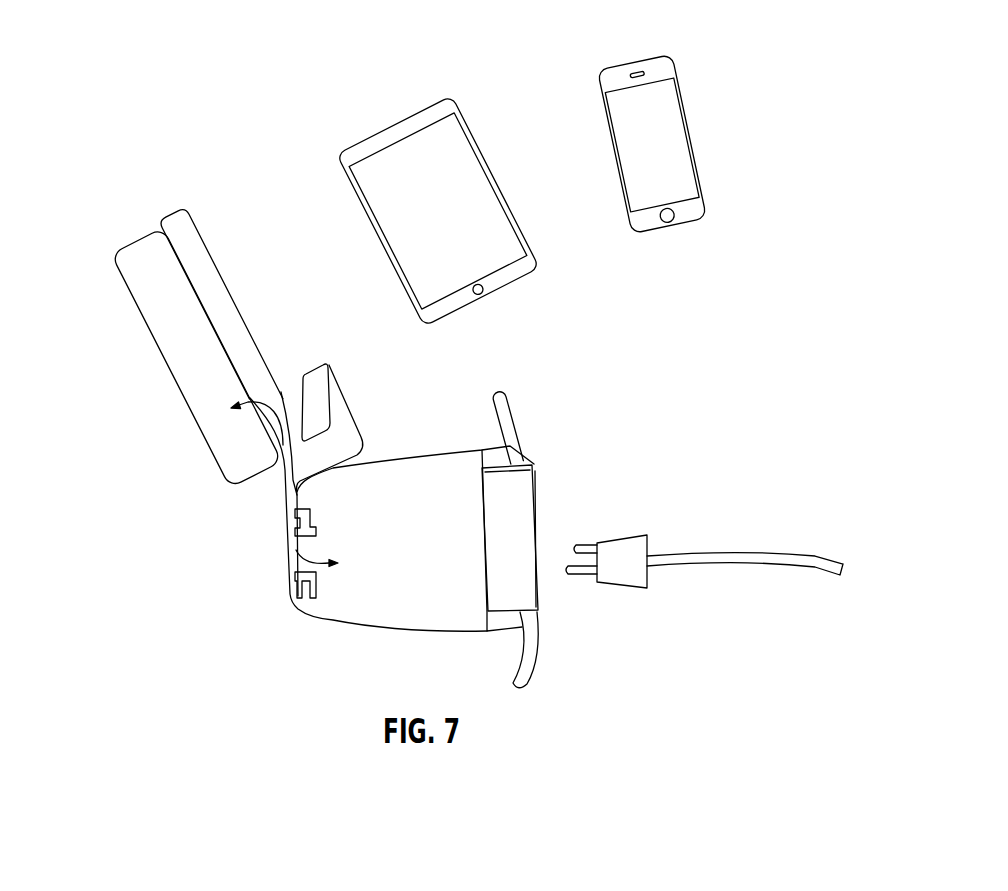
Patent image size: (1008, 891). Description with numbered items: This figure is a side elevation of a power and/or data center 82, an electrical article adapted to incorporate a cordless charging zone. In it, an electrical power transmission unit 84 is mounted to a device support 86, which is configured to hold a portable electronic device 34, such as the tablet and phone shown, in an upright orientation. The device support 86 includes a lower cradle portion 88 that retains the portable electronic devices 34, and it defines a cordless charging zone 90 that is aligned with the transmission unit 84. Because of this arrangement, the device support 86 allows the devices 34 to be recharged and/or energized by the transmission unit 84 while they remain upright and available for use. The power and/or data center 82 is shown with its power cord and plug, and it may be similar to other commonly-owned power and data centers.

The portable electronic device 34 is at (386, 118).
The power and/or data center 82 is at (659, 374).
The electrical power transmission unit 84 is at (142, 327).
The device support 86 is at (208, 242).
The lower cradle portion 88 is at (333, 400).
The cordless charging zone 90 is at (281, 419).